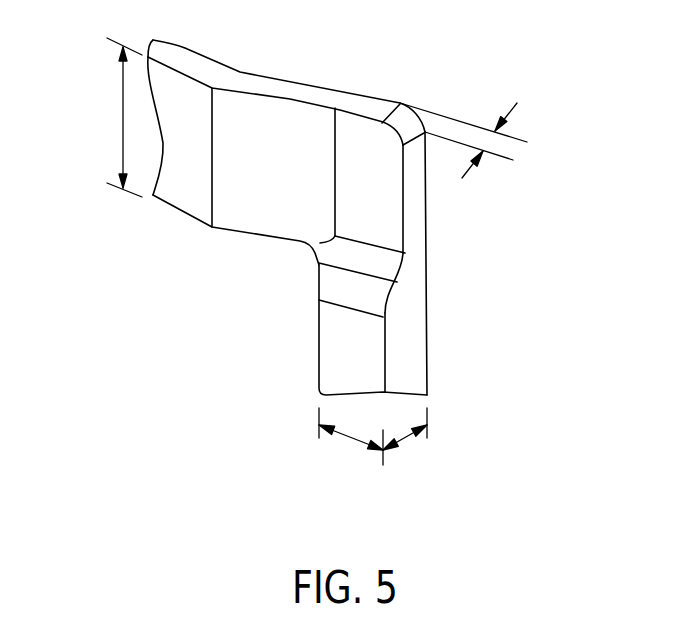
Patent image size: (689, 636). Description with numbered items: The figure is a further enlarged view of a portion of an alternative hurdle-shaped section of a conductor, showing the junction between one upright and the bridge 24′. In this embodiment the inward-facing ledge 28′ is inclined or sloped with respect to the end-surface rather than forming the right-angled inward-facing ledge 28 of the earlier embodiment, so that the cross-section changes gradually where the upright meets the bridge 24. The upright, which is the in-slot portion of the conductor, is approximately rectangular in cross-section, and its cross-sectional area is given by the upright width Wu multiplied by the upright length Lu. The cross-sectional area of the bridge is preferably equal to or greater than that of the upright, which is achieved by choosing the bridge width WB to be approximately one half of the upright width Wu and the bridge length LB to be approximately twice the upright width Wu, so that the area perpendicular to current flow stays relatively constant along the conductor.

The bridge 24′ is at (287, 206).
The bridge 24 is at (251, 108).
The inward-facing ledge 28′ is at (404, 315).
The inward-facing ledge 28 is at (378, 298).
The bridge length LB is at (122, 108).
The bridge width WB is at (520, 107).
The upright length Lu is at (360, 441).
The upright width Wu is at (407, 441).